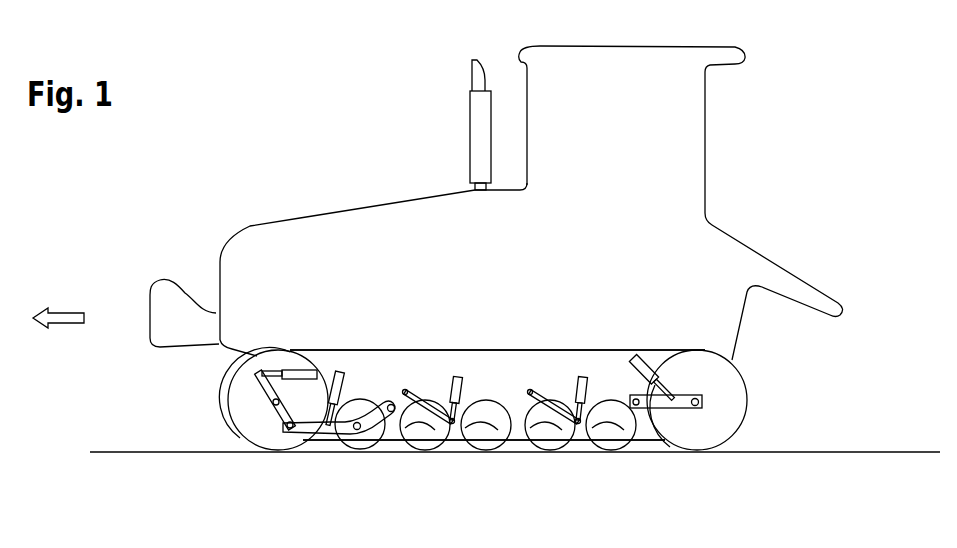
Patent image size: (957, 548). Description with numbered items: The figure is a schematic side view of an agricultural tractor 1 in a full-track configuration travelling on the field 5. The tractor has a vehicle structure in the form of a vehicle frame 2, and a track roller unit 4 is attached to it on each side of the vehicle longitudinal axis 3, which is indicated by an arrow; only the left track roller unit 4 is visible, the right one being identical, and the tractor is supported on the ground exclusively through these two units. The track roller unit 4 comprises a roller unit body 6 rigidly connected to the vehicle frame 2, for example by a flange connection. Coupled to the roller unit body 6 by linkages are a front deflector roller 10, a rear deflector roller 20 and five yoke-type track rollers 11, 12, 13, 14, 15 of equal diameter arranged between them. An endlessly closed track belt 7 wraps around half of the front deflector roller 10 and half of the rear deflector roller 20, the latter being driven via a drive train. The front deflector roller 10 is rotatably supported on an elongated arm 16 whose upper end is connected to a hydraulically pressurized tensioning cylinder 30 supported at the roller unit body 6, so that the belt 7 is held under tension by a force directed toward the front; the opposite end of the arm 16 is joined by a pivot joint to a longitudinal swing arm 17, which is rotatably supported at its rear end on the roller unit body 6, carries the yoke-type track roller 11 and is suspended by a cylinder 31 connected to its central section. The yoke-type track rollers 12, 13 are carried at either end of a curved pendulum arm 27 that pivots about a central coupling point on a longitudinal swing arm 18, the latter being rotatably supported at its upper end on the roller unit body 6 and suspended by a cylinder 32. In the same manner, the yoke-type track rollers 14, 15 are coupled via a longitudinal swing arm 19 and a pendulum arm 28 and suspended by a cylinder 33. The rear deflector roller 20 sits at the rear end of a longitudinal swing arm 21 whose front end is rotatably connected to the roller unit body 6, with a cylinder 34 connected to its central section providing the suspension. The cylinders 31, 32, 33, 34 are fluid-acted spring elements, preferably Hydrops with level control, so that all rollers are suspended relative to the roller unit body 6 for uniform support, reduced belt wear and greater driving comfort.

The agricultural tractor 1 is at (337, 127).
The vehicle frame 2 is at (493, 342).
The vehicle longitudinal axis 3 is at (64, 320).
The track roller unit 4 is at (770, 390).
The field 5 is at (152, 454).
The roller unit body 6 is at (480, 389).
The track belt 7 is at (547, 350).
The front deflector roller 10 is at (263, 430).
The yoke-type track roller 11 is at (352, 442).
The yoke-type track roller 12 is at (427, 442).
The yoke-type track roller 13 is at (485, 442).
The yoke-type track roller 14 is at (551, 442).
The yoke-type track roller 15 is at (612, 442).
The arm 16 is at (253, 415).
The longitudinal swing arm 17 is at (300, 436).
The longitudinal swing arm 18 is at (404, 410).
The longitudinal swing arm 19 is at (543, 420).
The rear deflector roller 20 is at (700, 440).
The longitudinal swing arm 21 is at (660, 410).
The pendulum arm 27 is at (451, 424).
The pendulum arm 28 is at (577, 424).
The cylinder 30 is at (298, 372).
The cylinder 31 is at (345, 388).
The cylinder 32 is at (445, 390).
The cylinder 33 is at (592, 390).
The cylinder 34 is at (643, 366).